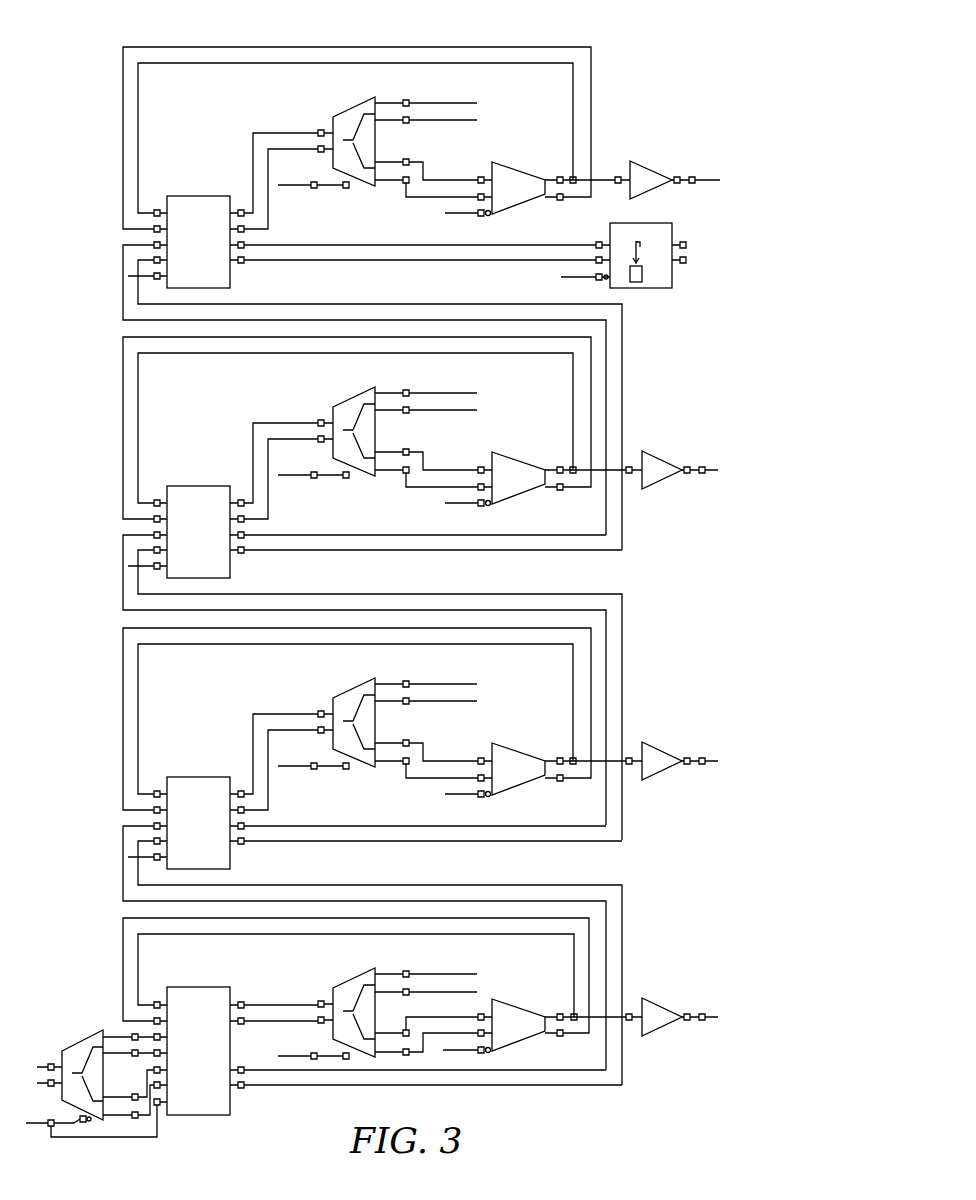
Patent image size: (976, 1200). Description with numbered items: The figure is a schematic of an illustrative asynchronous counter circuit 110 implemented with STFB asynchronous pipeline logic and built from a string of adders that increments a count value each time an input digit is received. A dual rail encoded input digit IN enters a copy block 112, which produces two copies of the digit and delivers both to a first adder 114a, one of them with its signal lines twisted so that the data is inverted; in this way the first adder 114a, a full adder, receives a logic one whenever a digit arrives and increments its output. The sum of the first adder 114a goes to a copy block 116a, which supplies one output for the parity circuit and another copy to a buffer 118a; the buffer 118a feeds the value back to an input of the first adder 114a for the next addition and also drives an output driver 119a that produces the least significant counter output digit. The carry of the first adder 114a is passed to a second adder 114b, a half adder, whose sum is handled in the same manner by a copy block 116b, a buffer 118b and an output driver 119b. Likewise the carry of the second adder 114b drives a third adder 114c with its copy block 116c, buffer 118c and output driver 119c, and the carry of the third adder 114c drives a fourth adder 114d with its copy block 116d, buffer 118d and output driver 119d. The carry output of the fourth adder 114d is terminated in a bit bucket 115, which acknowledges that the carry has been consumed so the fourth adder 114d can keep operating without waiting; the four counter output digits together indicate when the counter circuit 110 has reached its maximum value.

The asynchronous counter circuit 110 is at (397, 572).
The copy block 112 is at (68, 1045).
The first adder 114a is at (237, 987).
The second adder 114b is at (199, 802).
The third adder 114c is at (199, 511).
The fourth adder 114d is at (237, 196).
The bit bucket 115 is at (640, 289).
The copy block 116a is at (344, 979).
The copy block 116b is at (343, 714).
The copy block 116c is at (343, 423).
The copy block 116d is at (344, 108).
The buffer 118a is at (489, 994).
The buffer 118b is at (504, 756).
The buffer 118c is at (504, 465).
The buffer 118d is at (489, 157).
The output driver 119a is at (665, 1003).
The output driver 119b is at (642, 754).
The output driver 119c is at (642, 463).
The output driver 119d is at (654, 165).